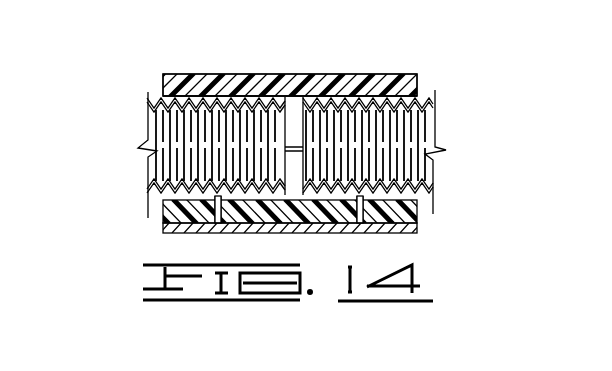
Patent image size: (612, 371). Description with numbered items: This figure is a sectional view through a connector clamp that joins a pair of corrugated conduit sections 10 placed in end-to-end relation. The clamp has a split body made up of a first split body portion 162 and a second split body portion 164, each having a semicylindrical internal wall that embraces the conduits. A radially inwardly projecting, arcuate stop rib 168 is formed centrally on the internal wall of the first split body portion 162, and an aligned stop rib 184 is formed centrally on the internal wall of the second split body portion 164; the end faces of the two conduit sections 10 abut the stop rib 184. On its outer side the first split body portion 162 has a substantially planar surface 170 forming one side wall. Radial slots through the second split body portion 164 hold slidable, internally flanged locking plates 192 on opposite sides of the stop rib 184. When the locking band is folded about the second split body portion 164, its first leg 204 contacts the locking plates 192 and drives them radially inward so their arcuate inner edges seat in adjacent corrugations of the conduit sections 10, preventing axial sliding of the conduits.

The corrugated conduit section 10 is at (148, 100).
The first split body portion 162 is at (418, 79).
The second split body portion 164 is at (161, 215).
The stop rib 168 is at (303, 95).
The planar surface 170 is at (272, 74).
The stop rib 184 is at (287, 180).
The locking plate 192 is at (214, 223).
The first leg 204 is at (417, 229).